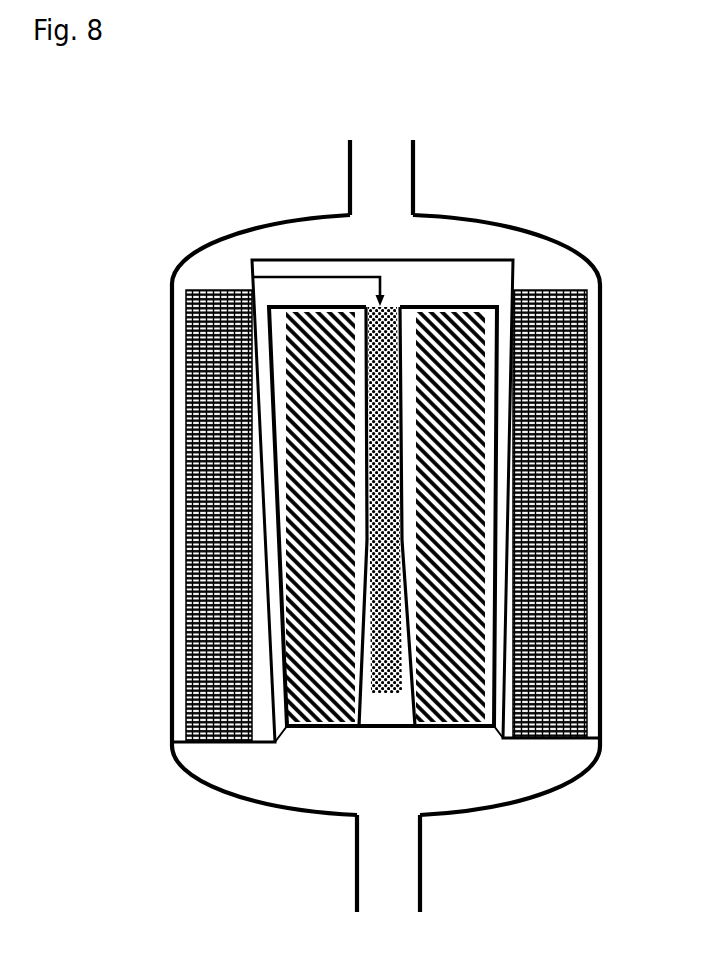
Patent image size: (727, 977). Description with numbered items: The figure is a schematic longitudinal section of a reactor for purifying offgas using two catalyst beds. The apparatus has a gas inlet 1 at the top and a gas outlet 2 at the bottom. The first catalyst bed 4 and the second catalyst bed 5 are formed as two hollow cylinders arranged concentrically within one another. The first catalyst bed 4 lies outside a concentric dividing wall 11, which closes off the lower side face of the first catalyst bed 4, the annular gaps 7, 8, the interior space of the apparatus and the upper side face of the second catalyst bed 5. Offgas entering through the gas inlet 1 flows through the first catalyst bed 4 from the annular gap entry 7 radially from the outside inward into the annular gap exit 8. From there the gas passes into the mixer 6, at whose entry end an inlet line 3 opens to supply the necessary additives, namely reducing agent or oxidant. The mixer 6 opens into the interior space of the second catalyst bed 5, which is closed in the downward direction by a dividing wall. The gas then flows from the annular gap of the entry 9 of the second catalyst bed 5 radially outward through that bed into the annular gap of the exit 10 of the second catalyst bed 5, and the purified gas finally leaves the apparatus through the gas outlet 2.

The gas inlet 1 is at (381, 152).
The gas outlet 2 is at (388, 887).
The inlet line 3 is at (252, 277).
The first catalyst bed 4 is at (386, 516).
The second catalyst bed 5 is at (385, 517).
The mixer 6 is at (404, 298).
The annular gap entry 7 is at (596, 343).
The annular gap exit 8 is at (517, 437).
The annular gap of the entry of the second catalyst bed 9 is at (413, 548).
The annular gap of the exit of the second catalyst bed 10 is at (504, 637).
The concentric dividing wall 11 is at (278, 732).